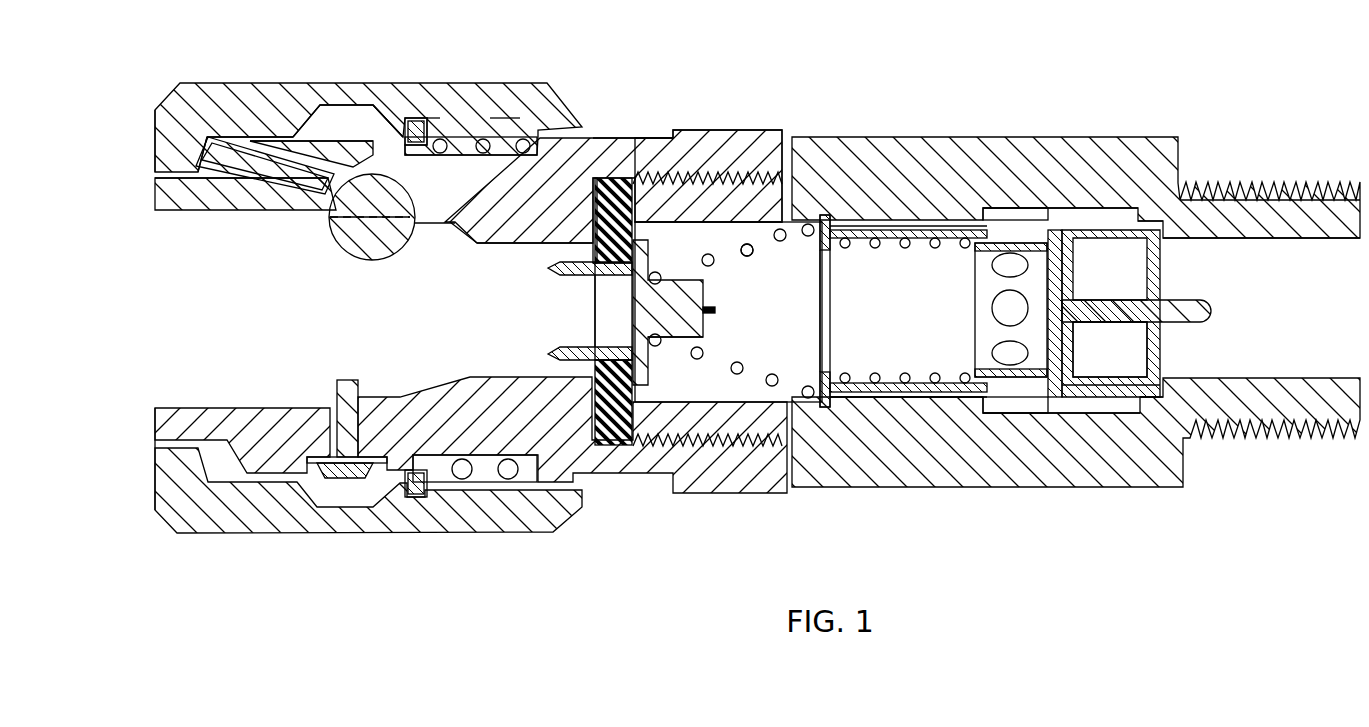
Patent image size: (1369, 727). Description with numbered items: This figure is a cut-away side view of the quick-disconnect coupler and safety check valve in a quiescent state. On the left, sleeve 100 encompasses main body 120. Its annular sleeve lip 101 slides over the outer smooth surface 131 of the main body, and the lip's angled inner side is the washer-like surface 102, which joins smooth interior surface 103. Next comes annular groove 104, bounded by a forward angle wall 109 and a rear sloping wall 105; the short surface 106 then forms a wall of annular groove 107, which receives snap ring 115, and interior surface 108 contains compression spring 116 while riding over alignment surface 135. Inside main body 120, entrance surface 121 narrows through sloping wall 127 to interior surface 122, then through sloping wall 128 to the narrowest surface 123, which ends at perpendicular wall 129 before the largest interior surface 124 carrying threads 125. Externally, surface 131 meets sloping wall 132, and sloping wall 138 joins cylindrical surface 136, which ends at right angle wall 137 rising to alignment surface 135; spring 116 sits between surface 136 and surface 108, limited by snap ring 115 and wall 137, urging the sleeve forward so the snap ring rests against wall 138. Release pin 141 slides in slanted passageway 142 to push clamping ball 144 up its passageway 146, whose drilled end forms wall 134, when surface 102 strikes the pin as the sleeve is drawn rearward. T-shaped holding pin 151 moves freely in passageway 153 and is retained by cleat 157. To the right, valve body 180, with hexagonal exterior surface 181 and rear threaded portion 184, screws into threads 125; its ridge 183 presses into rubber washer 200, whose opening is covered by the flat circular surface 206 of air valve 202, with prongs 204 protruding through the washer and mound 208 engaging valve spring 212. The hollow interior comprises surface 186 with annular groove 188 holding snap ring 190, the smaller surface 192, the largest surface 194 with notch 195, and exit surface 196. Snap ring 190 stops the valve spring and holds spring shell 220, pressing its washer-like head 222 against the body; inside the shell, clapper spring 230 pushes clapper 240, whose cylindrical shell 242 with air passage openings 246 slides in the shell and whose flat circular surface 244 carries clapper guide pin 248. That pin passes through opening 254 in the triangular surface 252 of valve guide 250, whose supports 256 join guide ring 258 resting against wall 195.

The sleeve 100 is at (236, 83).
The annular sleeve lip 101 is at (150, 120).
The annular washer-like surface 102 is at (216, 148).
The smooth cylindrical interior surface 103 is at (248, 136).
The annular groove 104 is at (410, 118).
The sloping wall 105 is at (416, 118).
The smooth cylindrical interior surface 106 is at (396, 134).
The annular groove 107 is at (432, 125).
The smooth cylindrical surface 108 is at (500, 125).
The angle wall 109 is at (318, 104).
The snap ring 115 is at (483, 138).
The compression spring 116 is at (523, 138).
The main body 120 is at (172, 198).
The smooth entrance cylindrical interior surface 121 is at (190, 200).
The smooth cylindrical interior surface 122 is at (418, 256).
The smooth cylindrical interior surface 123 is at (548, 268).
The largest diameter interior surface 124 is at (605, 177).
The threads 125 is at (700, 170).
The sloping wall 127 is at (345, 240).
The sloping wall 128 is at (450, 240).
The wall 129 is at (596, 400).
The smooth cylindrical surface 131 is at (200, 440).
The sloping wall 132 is at (248, 440).
The wall 134 is at (322, 214).
The smooth cylindrical alignment surface 135 is at (578, 138).
The cylindrical surface 136 is at (468, 420).
The right angle wall 137 is at (528, 436).
The sloping wall 138 is at (402, 456).
The release pin 141 is at (238, 136).
The passageway 142 is at (258, 198).
The clamping ball 144 is at (358, 262).
The passageway 146 is at (466, 188).
The holding pin 151 is at (356, 382).
The passageway 153 is at (318, 456).
The cleat 157 is at (314, 482).
The valve body 180 is at (851, 86).
The hexagon shaped cylindrical surface 181 is at (1040, 136).
The extended cylindrical ridge 183 is at (634, 172).
The threaded portion 184 is at (1250, 184).
The smooth cylindrical interior surface 186 is at (670, 404).
The annular groove 188 is at (826, 216).
The snap ring 190 is at (818, 322).
The smooth cylindrical interior surface 192 is at (904, 226).
The smooth cylindrical interior surface 194 is at (1046, 210).
The annular notch 195 is at (1172, 228).
The cylindrical interior surface 196 is at (1276, 240).
The rubber washer 200 is at (642, 430).
The air valve 202 is at (690, 292).
The prongs 204 is at (584, 336).
The flat circular surface 206 is at (596, 208).
The mound 208 is at (690, 344).
The valve spring 212 is at (760, 250).
The spring shell 220 is at (872, 398).
The circular head 222 is at (832, 380).
The clapper spring 230 is at (850, 250).
The clapper 240 is at (1030, 414).
The cylindrical shell 242 is at (1000, 384).
The flat circular surface 244 is at (1060, 222).
The air passage openings 246 is at (992, 268).
The clapper guide pin 248 is at (1196, 300).
The valve guide 250 is at (1076, 386).
The flat triangular shaped surface 252 is at (1074, 270).
The opening 254 is at (1068, 286).
The supports 256 is at (1090, 372).
The guide ring 258 is at (1112, 406).